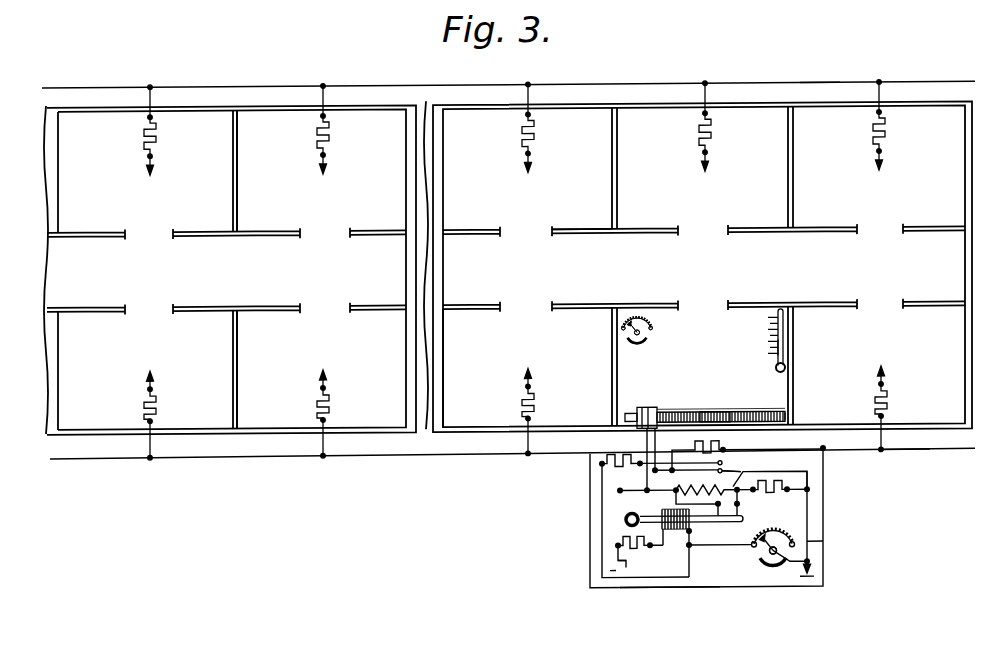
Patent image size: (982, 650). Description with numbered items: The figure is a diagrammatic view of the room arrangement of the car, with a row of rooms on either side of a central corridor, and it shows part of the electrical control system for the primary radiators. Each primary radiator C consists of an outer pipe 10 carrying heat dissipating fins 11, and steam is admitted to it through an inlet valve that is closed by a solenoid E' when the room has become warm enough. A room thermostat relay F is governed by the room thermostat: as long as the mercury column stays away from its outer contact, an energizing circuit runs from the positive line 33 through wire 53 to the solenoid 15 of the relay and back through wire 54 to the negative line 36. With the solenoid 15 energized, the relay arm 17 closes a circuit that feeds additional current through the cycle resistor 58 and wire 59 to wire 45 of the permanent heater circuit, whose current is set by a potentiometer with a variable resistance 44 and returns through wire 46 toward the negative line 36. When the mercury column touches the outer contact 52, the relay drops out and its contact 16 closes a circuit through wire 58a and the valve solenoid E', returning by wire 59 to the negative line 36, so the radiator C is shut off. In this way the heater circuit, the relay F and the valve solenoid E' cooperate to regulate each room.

The outer pipe 10 is at (786, 418).
The heat dissipating fins 11 is at (719, 413).
The solenoid 15 is at (746, 473).
The relay contact 16 is at (720, 470).
The relay arm 17 is at (746, 449).
The positive line 33 is at (823, 540).
The negative line 36 is at (620, 490).
The variable resistance 44 is at (790, 535).
The wire 45 is at (716, 548).
The wire 46 is at (660, 531).
The outer contact 52 is at (779, 494).
The wire 53 is at (823, 478).
The wire 54 is at (670, 491).
The cycle resistor 58 is at (600, 469).
The wire 58a is at (672, 450).
The wire 59 is at (642, 442).
The primary radiator C is at (686, 410).
The solenoid E' is at (641, 404).
The room thermostat relay F is at (731, 463).